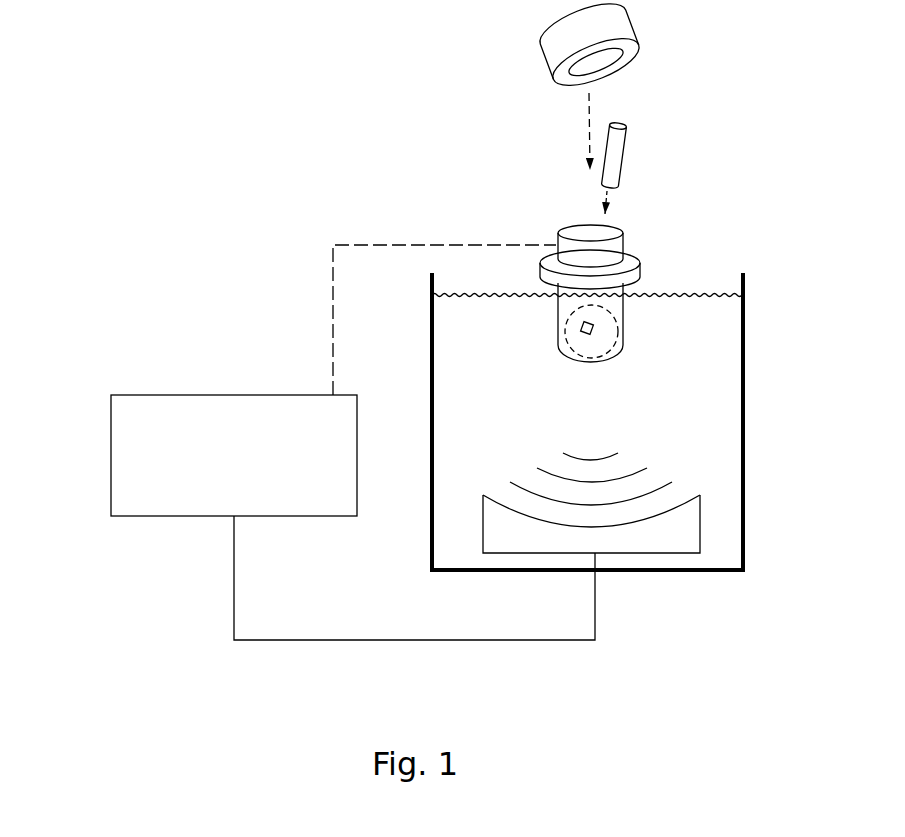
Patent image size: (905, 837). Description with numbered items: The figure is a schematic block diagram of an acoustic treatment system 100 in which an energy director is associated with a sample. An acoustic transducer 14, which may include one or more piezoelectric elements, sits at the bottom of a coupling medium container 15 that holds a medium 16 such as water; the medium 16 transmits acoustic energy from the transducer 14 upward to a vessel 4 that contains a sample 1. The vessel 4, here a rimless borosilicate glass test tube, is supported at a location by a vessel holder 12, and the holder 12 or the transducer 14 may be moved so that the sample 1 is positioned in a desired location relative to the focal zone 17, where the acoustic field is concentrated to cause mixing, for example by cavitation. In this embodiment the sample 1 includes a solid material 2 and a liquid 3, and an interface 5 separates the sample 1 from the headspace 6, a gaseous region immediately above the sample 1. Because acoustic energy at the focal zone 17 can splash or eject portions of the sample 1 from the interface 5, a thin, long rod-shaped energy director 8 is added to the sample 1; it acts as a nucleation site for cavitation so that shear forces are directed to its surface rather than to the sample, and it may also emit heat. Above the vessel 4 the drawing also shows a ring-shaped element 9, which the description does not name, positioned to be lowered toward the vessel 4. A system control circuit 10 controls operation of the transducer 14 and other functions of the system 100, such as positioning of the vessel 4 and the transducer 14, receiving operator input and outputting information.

The acoustic treatment system 100 is at (147, 255).
The sample 1 is at (640, 331).
The solid material 2 is at (582, 331).
The liquid 3 is at (615, 353).
The vessel 4 is at (612, 225).
The interface 5 is at (622, 312).
The headspace 6 is at (579, 228).
The energy director 8 is at (623, 145).
The sealing ring 9 is at (626, 28).
The system control circuit 10 is at (111, 457).
The vessel holder 12 is at (544, 273).
The acoustic transducer 14 is at (672, 542).
The coupling medium container 15 is at (745, 438).
The medium 16 is at (728, 369).
The focal zone 17 is at (573, 355).